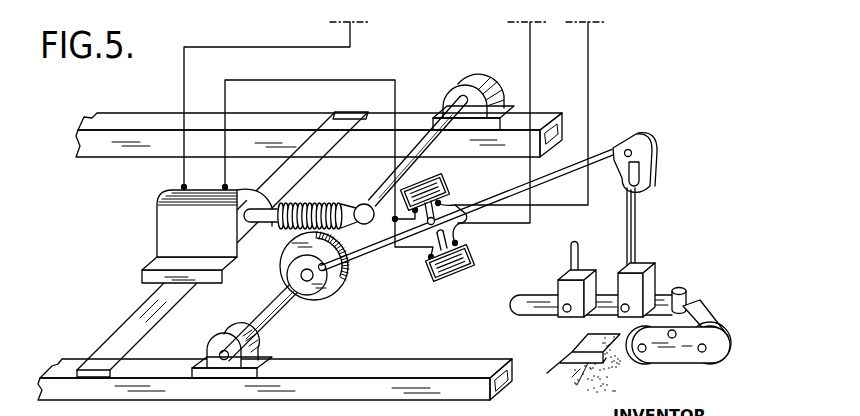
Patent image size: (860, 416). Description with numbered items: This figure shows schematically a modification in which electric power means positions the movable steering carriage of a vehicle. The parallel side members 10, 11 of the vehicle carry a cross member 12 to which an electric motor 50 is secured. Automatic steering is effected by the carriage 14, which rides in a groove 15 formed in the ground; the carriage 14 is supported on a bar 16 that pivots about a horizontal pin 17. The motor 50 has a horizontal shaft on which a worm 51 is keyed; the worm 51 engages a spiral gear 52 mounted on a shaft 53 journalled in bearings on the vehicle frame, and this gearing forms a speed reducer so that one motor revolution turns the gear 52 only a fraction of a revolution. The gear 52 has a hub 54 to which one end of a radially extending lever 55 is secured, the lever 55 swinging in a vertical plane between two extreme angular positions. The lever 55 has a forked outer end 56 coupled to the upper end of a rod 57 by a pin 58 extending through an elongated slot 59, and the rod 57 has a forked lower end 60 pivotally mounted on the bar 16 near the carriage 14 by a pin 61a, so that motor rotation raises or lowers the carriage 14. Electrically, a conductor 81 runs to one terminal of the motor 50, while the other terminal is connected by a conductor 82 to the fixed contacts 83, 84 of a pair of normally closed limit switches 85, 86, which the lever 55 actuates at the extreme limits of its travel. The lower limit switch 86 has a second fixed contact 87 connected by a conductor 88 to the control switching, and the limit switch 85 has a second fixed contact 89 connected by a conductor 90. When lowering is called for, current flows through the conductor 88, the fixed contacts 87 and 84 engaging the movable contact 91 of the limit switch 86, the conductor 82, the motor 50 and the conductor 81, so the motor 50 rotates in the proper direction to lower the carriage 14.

The side member 10 is at (62, 366).
The side member 11 is at (110, 150).
The cross member 12 is at (130, 323).
The carriage 14 is at (672, 356).
The groove 15 is at (571, 352).
The bar 16 is at (602, 297).
The horizontal pin 17 is at (568, 314).
The electric motor 50 is at (158, 231).
The worm 51 is at (334, 202).
The spiral gear 52 is at (284, 271).
The shaft 53 is at (272, 312).
The hub 54 is at (314, 286).
The lever 55 is at (560, 176).
The forked outer end 56 is at (619, 144).
The rod 57 is at (636, 229).
The pin 58 is at (632, 153).
The elongated slot 59 is at (637, 174).
The forked lower end 60 is at (644, 273).
The pin 61a is at (623, 313).
The conductor 81 is at (285, 47).
The conductor 82 is at (313, 80).
The fixed contact 83 is at (394, 220).
The fixed contact 84 is at (429, 258).
The limit switch 85 is at (447, 182).
The limit switch 86 is at (425, 275).
The second fixed contact 87 is at (457, 244).
The conductor 88 is at (526, 46).
The second fixed contact 89 is at (440, 204).
The conductor 90 is at (591, 47).
The movable contact 91 is at (468, 217).